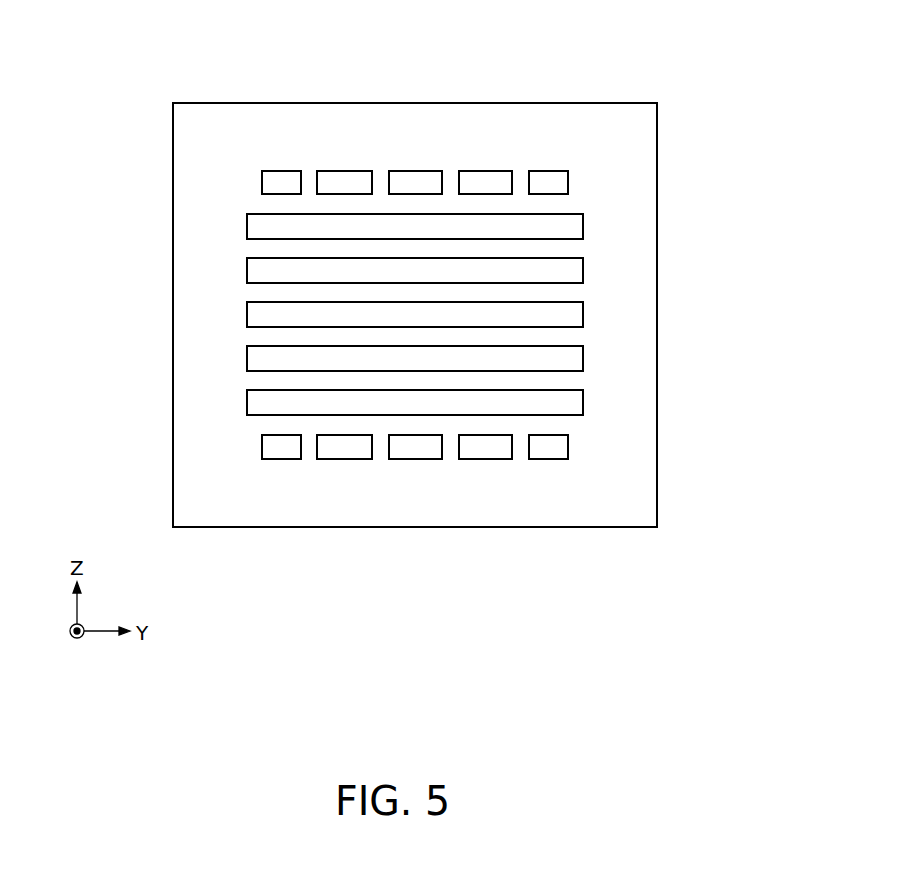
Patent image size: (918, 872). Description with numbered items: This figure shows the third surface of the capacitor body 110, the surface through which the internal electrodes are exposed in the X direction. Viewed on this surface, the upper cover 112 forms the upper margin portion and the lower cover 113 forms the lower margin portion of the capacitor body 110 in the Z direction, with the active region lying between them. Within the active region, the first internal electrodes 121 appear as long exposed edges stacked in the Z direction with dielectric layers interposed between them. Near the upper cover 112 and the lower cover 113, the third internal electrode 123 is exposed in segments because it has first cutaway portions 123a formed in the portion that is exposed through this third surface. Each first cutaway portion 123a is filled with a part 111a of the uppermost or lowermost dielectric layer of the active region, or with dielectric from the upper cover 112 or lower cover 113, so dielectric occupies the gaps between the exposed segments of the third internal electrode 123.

The capacitor body 110 is at (607, 102).
The part of dielectric layer 111a is at (380, 179).
The upper cover 112 is at (514, 119).
The lower cover 113 is at (444, 508).
The first internal electrode 121 is at (583, 224).
The third internal electrode 123 is at (411, 182).
The first cutaway portion 123a is at (318, 180).